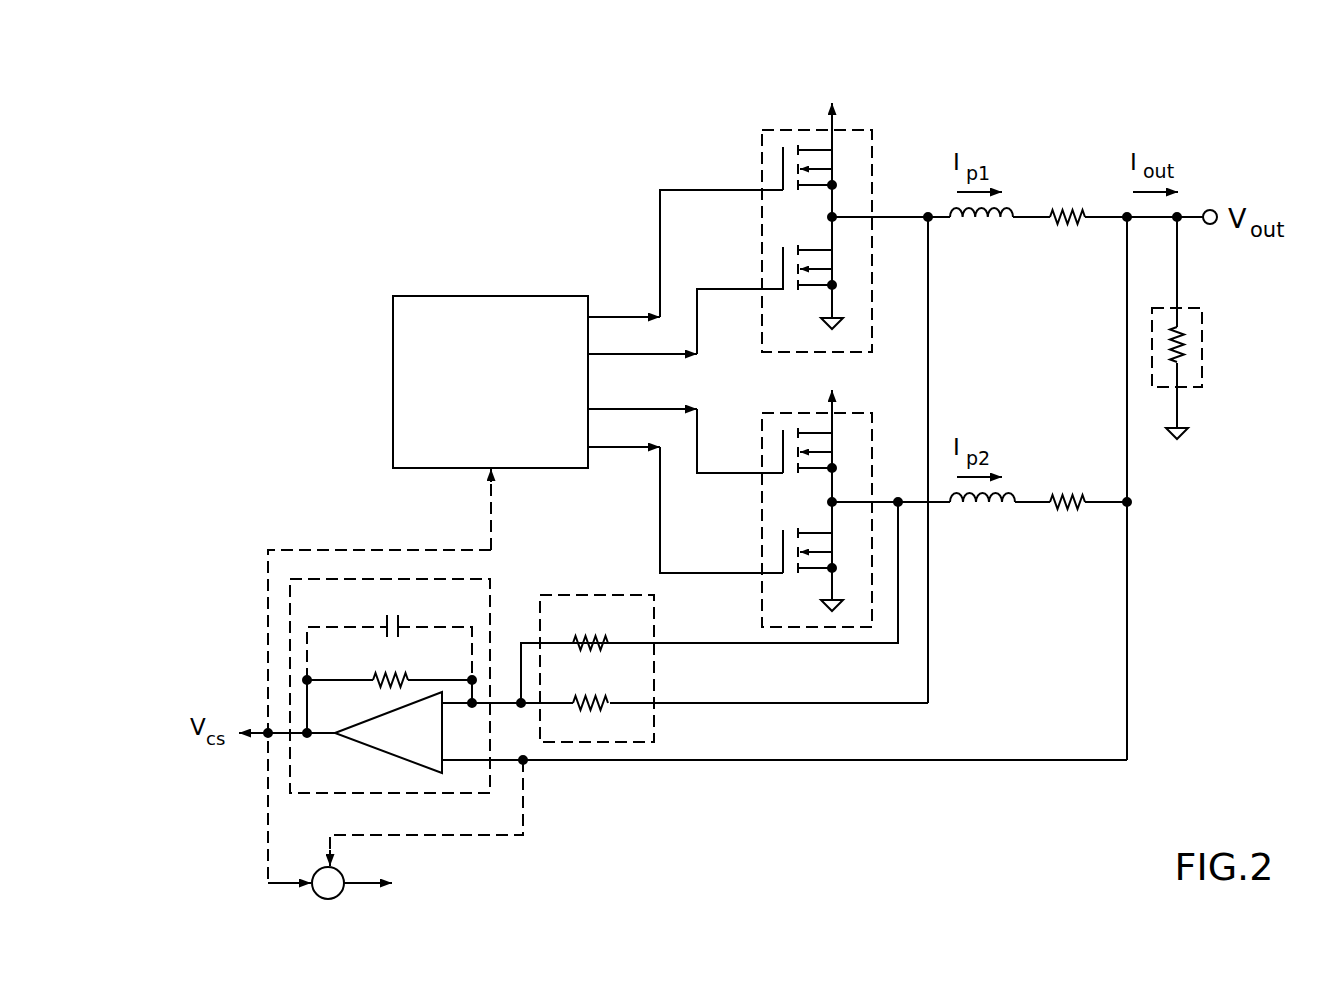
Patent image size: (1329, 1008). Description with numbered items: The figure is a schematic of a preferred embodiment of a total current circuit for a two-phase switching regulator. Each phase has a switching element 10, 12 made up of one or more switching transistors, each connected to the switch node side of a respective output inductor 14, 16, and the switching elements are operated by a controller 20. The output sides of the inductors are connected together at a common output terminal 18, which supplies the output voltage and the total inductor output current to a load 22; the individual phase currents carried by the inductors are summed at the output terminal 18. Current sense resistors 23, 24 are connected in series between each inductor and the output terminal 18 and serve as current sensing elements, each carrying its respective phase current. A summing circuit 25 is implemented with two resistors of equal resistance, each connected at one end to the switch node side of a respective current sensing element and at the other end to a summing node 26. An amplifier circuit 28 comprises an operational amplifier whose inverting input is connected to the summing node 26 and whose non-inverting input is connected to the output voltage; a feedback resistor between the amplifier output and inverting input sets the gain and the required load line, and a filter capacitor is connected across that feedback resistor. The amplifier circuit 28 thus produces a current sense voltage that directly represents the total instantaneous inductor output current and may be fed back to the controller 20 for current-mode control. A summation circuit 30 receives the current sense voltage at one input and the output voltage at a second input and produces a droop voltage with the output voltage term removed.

The switching element 10 is at (762, 155).
The switching element 12 is at (762, 438).
The output inductor 14 is at (987, 244).
The output inductor 16 is at (989, 527).
The output terminal 18 is at (1126, 212).
The controller 20 is at (495, 296).
The load 22 is at (1202, 331).
The current sense resistor 23 is at (1058, 244).
The current sense resistor 24 is at (1058, 527).
The summing circuit 25 is at (605, 595).
The summing node 26 is at (519, 699).
The amplifier circuit 28 is at (380, 793).
The summation circuit 30 is at (337, 897).